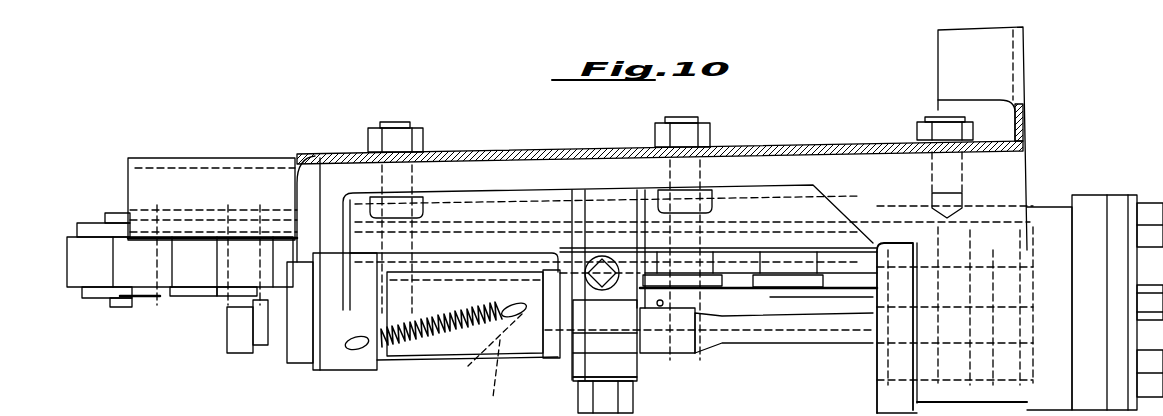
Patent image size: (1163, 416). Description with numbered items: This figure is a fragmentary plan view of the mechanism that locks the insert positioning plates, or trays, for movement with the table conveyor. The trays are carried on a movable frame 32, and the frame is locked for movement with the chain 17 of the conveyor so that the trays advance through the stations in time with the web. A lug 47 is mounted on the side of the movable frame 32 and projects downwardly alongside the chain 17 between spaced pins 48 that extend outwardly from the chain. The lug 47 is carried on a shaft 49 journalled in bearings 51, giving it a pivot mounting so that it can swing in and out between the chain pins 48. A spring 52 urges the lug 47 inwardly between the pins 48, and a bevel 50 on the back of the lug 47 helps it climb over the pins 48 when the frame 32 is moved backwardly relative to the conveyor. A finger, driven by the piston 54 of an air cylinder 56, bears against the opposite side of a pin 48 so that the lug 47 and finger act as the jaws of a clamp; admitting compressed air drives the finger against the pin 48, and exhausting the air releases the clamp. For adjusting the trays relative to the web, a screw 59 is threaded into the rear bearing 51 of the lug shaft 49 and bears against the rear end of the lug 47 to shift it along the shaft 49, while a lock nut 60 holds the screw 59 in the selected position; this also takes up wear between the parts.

The conveyor chain 17 is at (145, 277).
The movable frame 32 is at (249, 182).
The lug 47 is at (515, 357).
The pins 48 is at (234, 343).
The shaft 49 is at (483, 340).
The bevel 50 is at (494, 384).
The bearings 51 is at (353, 366).
The spring 52 is at (431, 333).
The piston 54 is at (877, 375).
The air cylinder 56 is at (1028, 390).
The screw 59 is at (262, 338).
The lock nut 60 is at (299, 362).